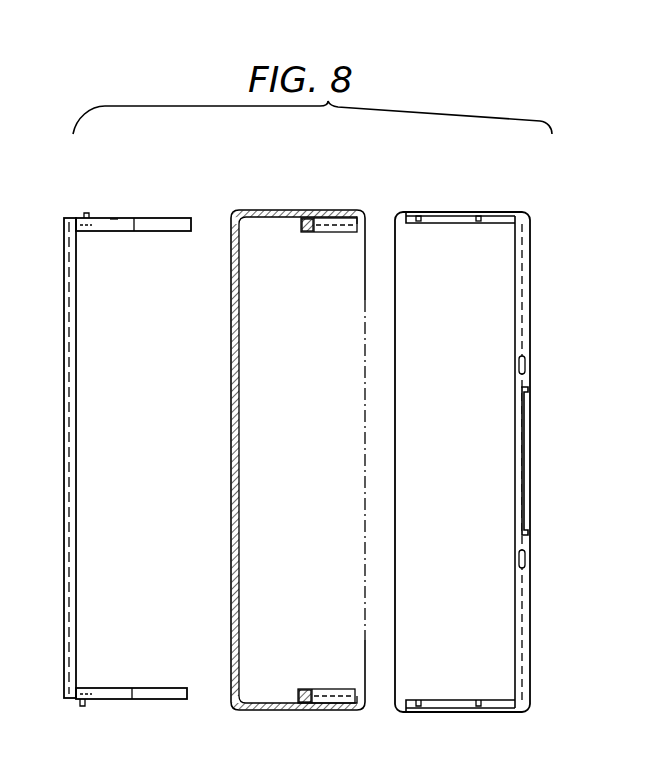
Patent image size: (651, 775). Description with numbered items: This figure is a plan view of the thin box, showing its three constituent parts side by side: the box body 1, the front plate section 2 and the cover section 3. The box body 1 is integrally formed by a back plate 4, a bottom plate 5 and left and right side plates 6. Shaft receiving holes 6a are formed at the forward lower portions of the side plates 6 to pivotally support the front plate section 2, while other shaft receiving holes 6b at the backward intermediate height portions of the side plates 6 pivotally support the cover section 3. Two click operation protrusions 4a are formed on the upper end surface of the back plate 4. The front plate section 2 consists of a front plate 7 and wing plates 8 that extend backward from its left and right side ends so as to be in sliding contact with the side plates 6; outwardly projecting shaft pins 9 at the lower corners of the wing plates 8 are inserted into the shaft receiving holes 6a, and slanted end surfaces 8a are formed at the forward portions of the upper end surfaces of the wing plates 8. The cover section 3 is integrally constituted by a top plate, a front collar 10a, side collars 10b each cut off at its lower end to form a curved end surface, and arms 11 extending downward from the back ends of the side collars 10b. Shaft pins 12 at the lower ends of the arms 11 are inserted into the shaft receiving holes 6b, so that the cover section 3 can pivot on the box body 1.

The box body 1 is at (468, 193).
The front plate section 2 is at (150, 200).
The cover section 3 is at (317, 194).
The back plate 4 is at (522, 586).
The click operation protrusions 4a is at (527, 362).
The bottom plate 5 is at (397, 510).
The side plates 6 is at (503, 212).
The shaft receiving holes 6a is at (418, 223).
The shaft receiving holes 6b is at (478, 223).
The front plate 7 is at (66, 466).
The wing plates 8 is at (108, 232).
The slanted end surfaces 8a is at (114, 221).
The shaft pins 9 is at (84, 213).
The front collar 10a is at (232, 418).
The side collars 10b is at (270, 210).
The arms 11 is at (337, 232).
The shaft pins 12 is at (305, 233).